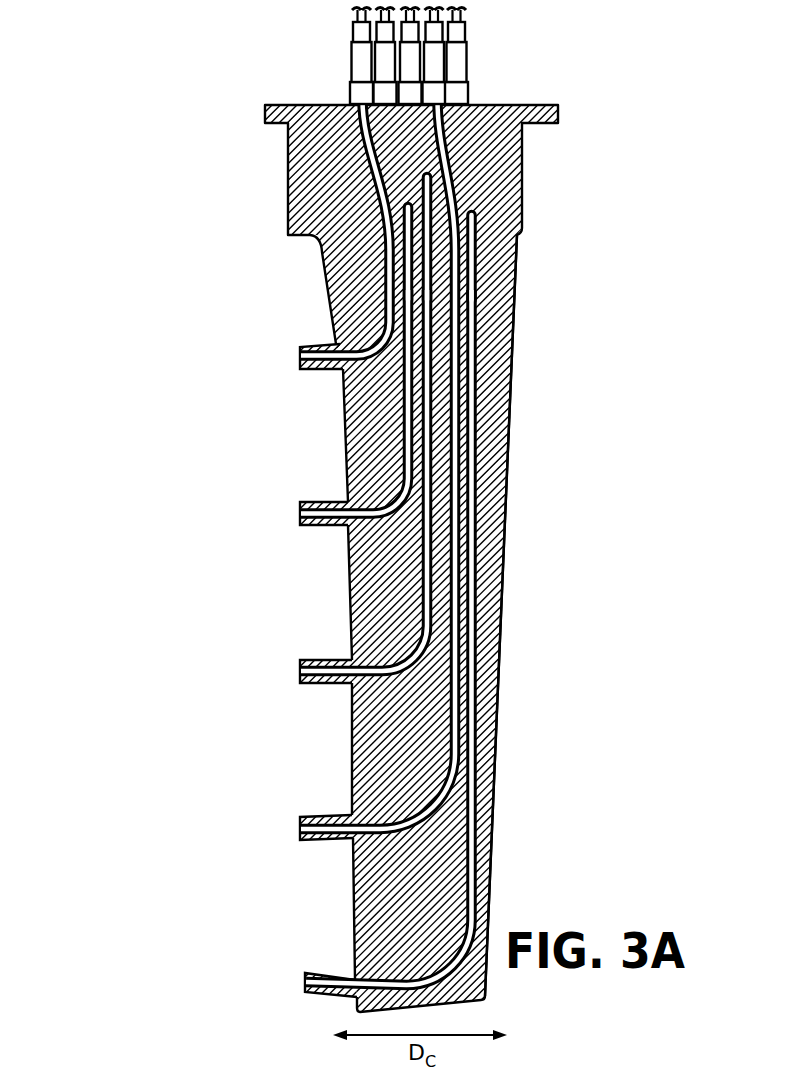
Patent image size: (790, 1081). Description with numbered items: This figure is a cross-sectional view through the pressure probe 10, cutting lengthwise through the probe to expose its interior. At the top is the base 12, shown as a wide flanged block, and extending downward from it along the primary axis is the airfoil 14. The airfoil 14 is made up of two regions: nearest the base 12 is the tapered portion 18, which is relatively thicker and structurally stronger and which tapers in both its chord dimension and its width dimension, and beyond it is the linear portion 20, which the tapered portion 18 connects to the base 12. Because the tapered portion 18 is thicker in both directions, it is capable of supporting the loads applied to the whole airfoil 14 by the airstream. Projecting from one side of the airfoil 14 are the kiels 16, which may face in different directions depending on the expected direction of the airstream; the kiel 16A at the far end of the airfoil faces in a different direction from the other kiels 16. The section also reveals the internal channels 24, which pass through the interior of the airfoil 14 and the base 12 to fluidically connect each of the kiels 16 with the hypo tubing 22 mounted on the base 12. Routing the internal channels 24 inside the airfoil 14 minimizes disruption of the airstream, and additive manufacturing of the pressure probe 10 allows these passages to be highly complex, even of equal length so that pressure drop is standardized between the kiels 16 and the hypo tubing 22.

The pressure probe 10 is at (395, 506).
The base 12 is at (548, 157).
The airfoil 14 is at (585, 505).
The kiels 16 is at (298, 362).
The kiel 16A is at (305, 978).
The tapered portion 18 is at (517, 256).
The linear portion 20 is at (493, 760).
The hypo tubing 22 is at (466, 58).
The internal channels 24 is at (470, 652).